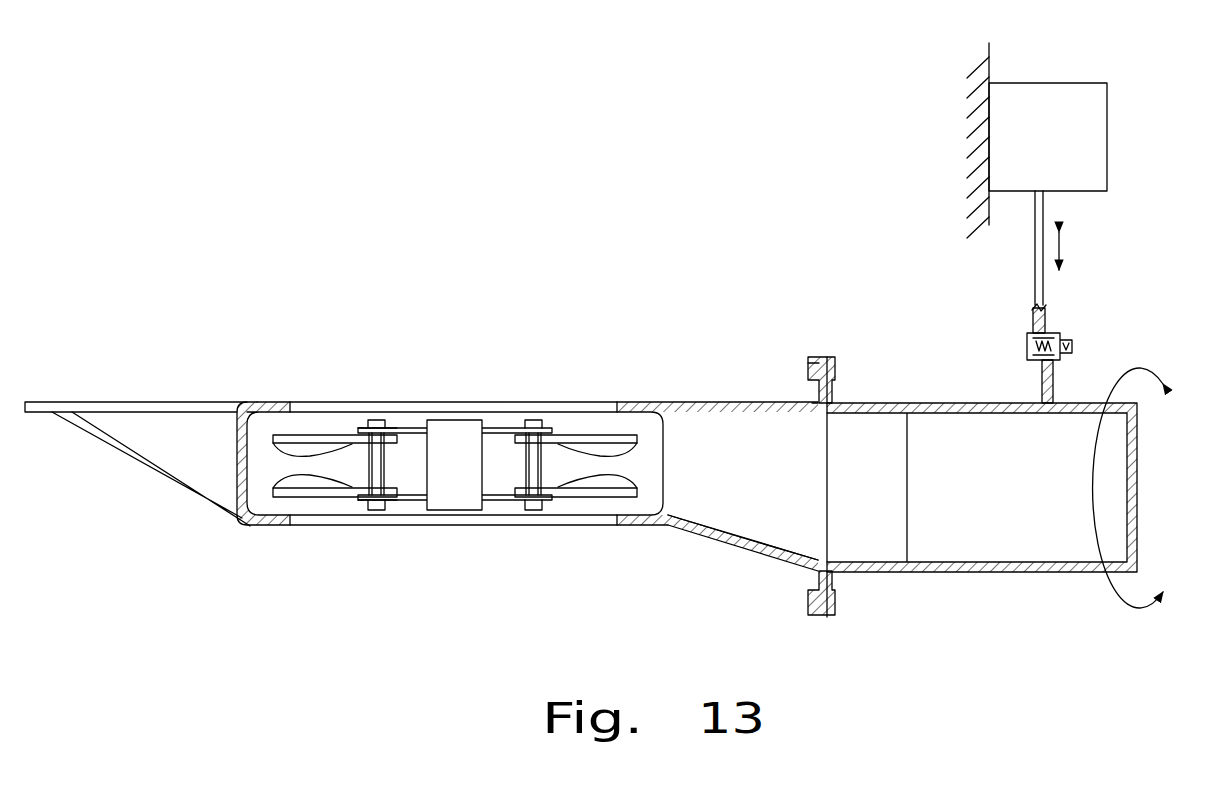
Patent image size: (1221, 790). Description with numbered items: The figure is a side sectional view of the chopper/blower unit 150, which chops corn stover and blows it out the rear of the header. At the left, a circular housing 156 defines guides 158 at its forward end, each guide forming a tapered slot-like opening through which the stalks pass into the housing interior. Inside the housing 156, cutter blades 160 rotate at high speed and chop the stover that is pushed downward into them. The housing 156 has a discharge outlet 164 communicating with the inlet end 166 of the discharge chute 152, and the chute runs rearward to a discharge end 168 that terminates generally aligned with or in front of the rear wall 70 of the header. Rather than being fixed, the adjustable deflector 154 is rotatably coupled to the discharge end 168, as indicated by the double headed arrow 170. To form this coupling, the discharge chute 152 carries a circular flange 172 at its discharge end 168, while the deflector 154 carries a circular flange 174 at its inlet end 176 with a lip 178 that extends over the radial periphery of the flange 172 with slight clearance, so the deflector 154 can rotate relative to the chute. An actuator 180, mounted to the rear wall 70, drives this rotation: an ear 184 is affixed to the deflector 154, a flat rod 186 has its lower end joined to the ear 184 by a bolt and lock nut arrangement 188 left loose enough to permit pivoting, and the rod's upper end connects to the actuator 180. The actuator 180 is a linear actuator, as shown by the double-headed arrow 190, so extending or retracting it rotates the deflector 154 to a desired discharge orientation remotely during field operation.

The rear wall 70 is at (990, 61).
The chopper/blower unit 150 is at (784, 298).
The discharge chute 152 is at (736, 403).
The adjustable deflector 154 is at (997, 573).
The circular housing 156 is at (262, 527).
The guides 158 is at (157, 402).
The cutter blades 160 is at (598, 435).
The discharge outlet 164 is at (664, 497).
The inlet end 166 is at (658, 403).
The discharge end 168 is at (794, 567).
The double headed arrow 170 is at (1093, 495).
The circular flange 172 is at (815, 401).
The circular flange 174 is at (836, 380).
The inlet end 176 is at (840, 588).
The lip 178 is at (808, 366).
The actuator 180 is at (1107, 129).
The ear 184 is at (1043, 394).
The flat rod 186 is at (1034, 279).
The bolt and lock nut arrangement 188 is at (1068, 345).
The double-headed arrow 190 is at (1062, 252).